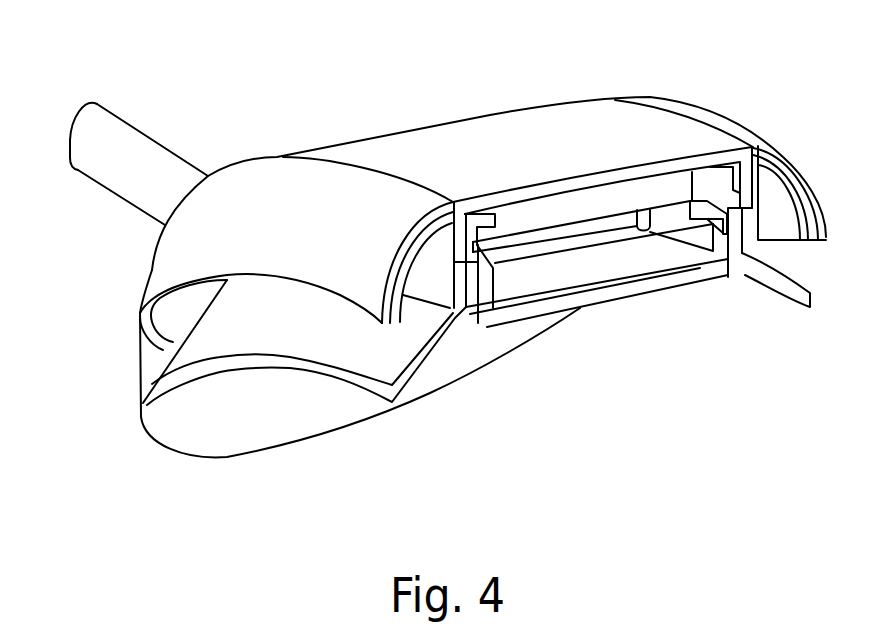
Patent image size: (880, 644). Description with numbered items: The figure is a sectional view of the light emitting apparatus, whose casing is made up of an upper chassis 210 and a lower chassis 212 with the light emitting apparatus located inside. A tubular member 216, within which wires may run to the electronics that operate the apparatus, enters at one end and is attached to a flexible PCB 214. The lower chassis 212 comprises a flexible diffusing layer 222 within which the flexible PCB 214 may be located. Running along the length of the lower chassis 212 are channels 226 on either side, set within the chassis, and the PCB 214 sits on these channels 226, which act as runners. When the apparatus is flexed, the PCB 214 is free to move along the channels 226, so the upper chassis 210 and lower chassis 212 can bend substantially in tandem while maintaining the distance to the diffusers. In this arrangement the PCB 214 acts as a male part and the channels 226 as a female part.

The upper chassis 210 is at (495, 140).
The lower chassis 212 is at (477, 373).
The flexible PCB 214 is at (614, 205).
The tubular member 216 is at (90, 128).
The flexible diffusing layer 222 is at (606, 263).
The channels 226 is at (728, 218).